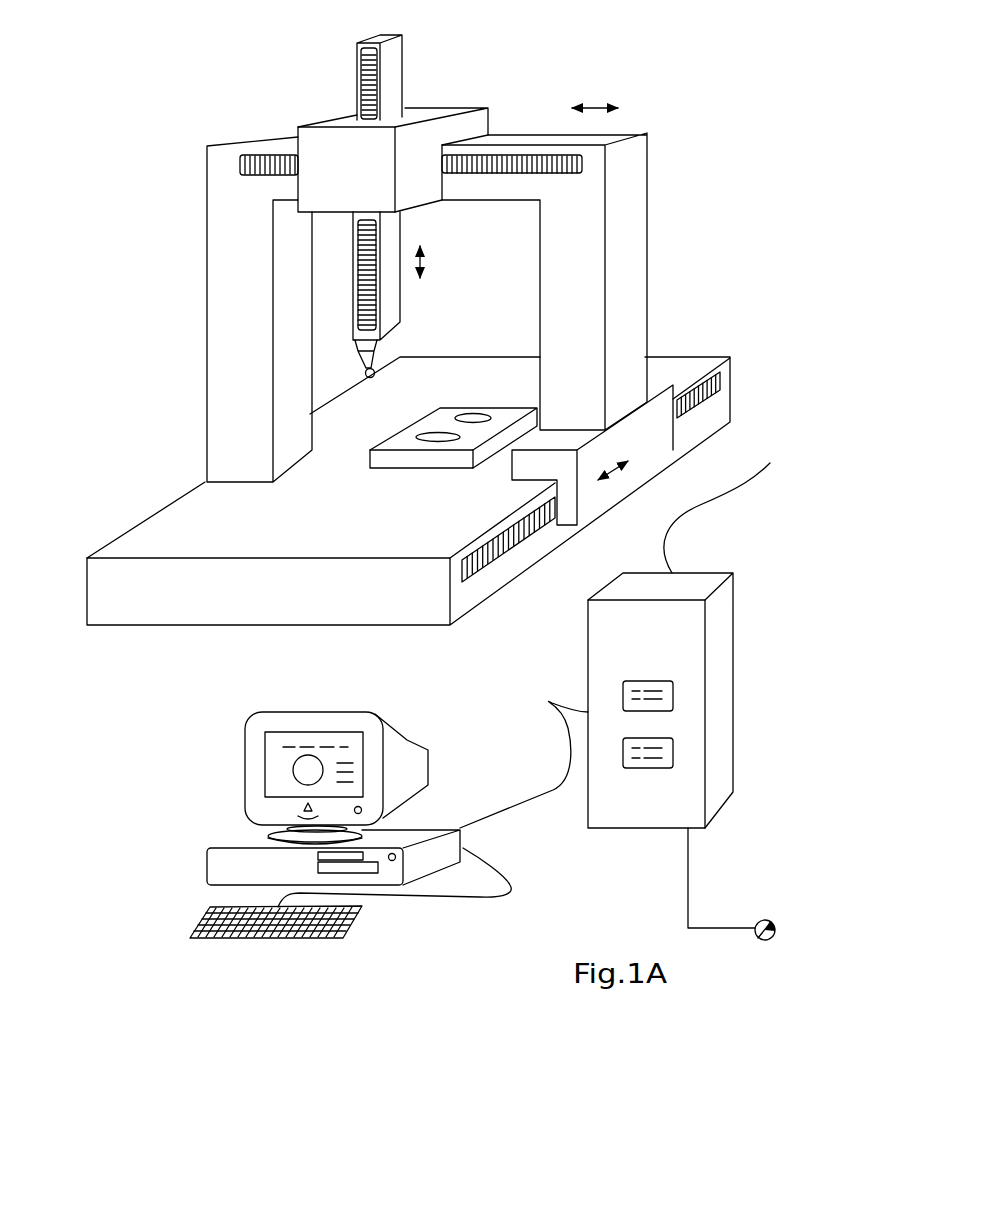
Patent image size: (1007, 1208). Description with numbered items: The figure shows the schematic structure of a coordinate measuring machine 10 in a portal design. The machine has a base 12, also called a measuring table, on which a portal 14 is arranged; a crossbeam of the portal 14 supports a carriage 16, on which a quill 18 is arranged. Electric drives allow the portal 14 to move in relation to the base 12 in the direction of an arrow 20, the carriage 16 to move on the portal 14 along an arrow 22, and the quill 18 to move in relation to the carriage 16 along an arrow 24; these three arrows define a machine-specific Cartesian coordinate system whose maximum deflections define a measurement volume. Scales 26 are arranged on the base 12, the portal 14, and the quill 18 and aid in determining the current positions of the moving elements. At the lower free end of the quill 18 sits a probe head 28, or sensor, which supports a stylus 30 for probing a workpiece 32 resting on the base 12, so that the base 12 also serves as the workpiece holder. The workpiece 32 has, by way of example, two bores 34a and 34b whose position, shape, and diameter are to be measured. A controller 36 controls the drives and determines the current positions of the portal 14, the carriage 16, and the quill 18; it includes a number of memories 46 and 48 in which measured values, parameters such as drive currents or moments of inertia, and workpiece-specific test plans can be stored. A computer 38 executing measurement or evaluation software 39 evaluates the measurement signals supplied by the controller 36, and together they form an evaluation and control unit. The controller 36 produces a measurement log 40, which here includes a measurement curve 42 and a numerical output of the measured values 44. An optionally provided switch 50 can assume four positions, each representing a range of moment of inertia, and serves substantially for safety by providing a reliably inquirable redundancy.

The coordinate measuring machine 10 is at (168, 224).
The base 12 is at (722, 350).
The portal 14 is at (213, 375).
The carriage 16 is at (405, 108).
The quill 18 is at (398, 66).
The arrow 20 is at (615, 470).
The arrow 22 is at (590, 108).
The arrow 24 is at (422, 262).
The scales 26 is at (253, 155).
The probe head 28 is at (387, 345).
The stylus 30 is at (366, 375).
The workpiece 32 is at (425, 450).
The bore 34a is at (452, 445).
The bore 34b is at (468, 418).
The controller 36 is at (735, 660).
The computer 38 is at (382, 722).
The measurement software 39 is at (198, 860).
The measurement log 40 is at (272, 716).
The measurement curve 42 is at (293, 770).
The numerical output of the measured values 44 is at (345, 765).
The memory 46 is at (673, 692).
The memory 48 is at (673, 750).
The switch 50 is at (740, 948).